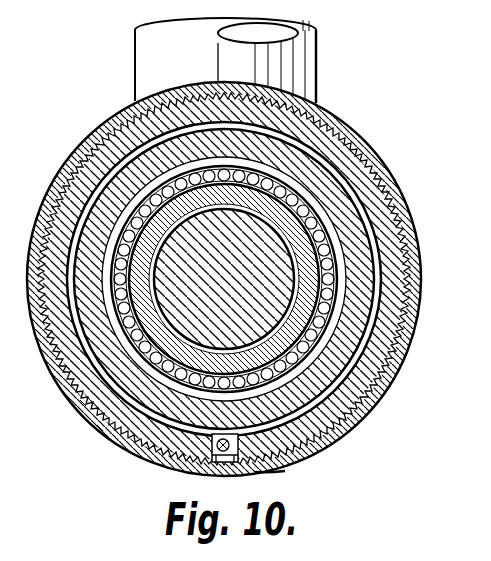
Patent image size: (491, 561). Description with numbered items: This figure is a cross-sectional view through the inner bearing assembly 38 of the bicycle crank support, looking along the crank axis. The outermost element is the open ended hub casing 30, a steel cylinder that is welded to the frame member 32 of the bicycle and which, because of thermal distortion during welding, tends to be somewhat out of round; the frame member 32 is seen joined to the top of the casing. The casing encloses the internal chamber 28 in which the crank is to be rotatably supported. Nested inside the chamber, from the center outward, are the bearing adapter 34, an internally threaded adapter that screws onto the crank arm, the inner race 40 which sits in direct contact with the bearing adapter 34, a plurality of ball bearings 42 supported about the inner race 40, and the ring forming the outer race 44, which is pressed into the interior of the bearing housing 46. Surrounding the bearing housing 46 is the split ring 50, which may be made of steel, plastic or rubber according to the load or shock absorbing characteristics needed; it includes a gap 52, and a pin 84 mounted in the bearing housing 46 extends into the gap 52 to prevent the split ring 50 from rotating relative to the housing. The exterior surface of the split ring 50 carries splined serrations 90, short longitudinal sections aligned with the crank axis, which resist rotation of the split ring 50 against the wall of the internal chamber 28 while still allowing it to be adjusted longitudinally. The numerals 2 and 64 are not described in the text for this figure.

The shaft 2 is at (149, 279).
The internal chamber 28 is at (133, 125).
The hub casing 30 is at (363, 137).
The frame member 32 is at (317, 68).
The first bearing adapter 34 is at (167, 262).
The inner bearing assembly 38 is at (380, 182).
The inner race 40 is at (278, 383).
The ball bearings 42 is at (312, 375).
The outer race 44 is at (323, 407).
The bearing housing 46 is at (163, 403).
The split ring 50 is at (60, 362).
The gap 52 is at (213, 462).
The inner ring 64 is at (148, 232).
The pin 84 is at (270, 474).
The splined serrations 90 is at (100, 428).